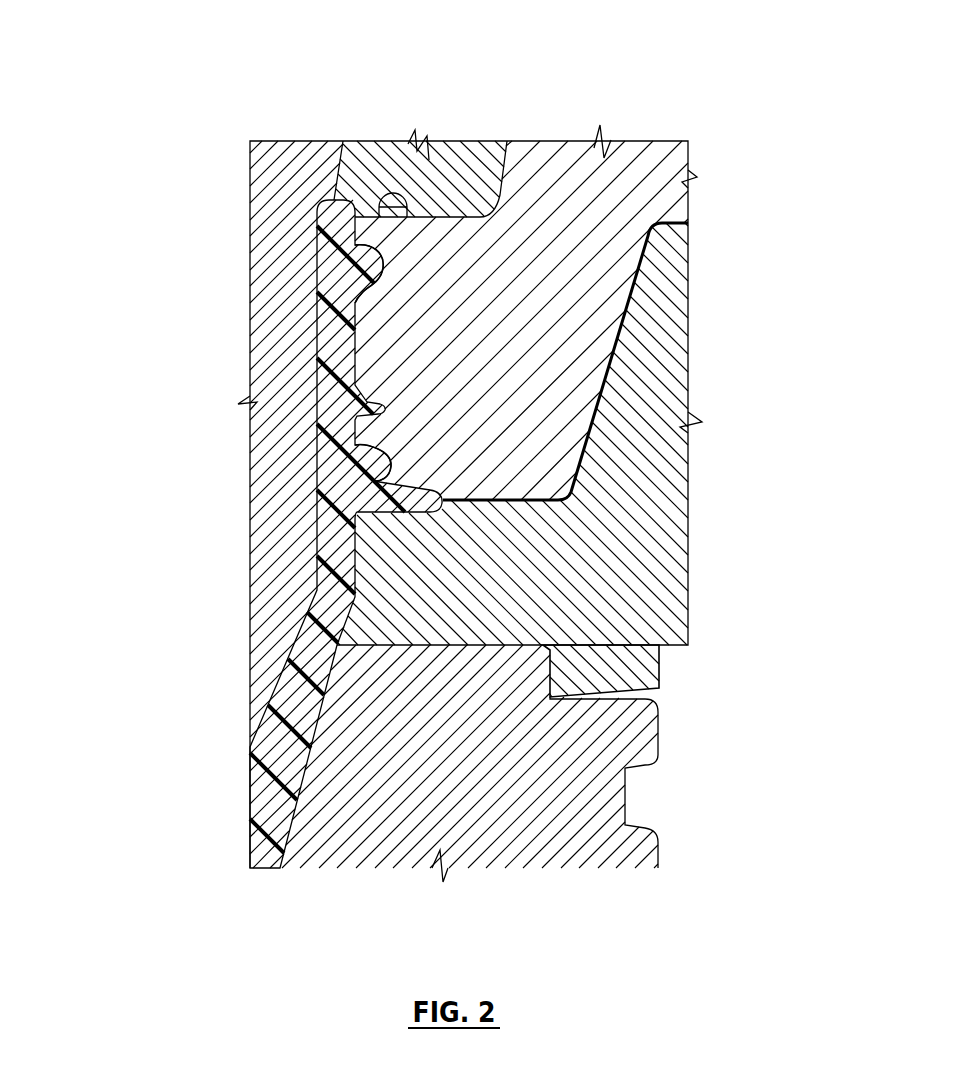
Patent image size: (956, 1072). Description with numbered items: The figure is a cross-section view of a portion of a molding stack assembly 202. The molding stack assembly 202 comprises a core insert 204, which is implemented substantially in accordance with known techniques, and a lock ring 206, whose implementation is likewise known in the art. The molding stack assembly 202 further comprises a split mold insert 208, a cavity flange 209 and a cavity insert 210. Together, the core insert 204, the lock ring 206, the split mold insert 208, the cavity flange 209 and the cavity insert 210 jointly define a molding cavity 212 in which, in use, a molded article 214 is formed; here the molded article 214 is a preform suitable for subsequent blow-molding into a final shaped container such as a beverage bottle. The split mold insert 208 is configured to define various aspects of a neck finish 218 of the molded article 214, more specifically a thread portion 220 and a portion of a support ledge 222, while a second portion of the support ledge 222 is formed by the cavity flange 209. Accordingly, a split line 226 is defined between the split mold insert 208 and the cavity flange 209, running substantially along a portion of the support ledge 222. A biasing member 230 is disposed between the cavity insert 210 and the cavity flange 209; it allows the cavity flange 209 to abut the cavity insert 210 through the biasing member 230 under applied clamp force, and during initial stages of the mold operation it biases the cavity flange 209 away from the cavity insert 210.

The molding stack assembly 202 is at (118, 875).
The core insert 204 is at (273, 505).
The lock ring 206 is at (428, 158).
The split mold insert 208 is at (665, 186).
The cavity flange 209 is at (662, 482).
The cavity insert 210 is at (460, 846).
The molding cavity 212 is at (325, 549).
The molded article 214 is at (292, 703).
The neck finish 218 is at (355, 330).
The thread portion 220 is at (360, 247).
The support ledge 222 is at (372, 447).
The split line 226 is at (520, 500).
The biasing member 230 is at (640, 662).